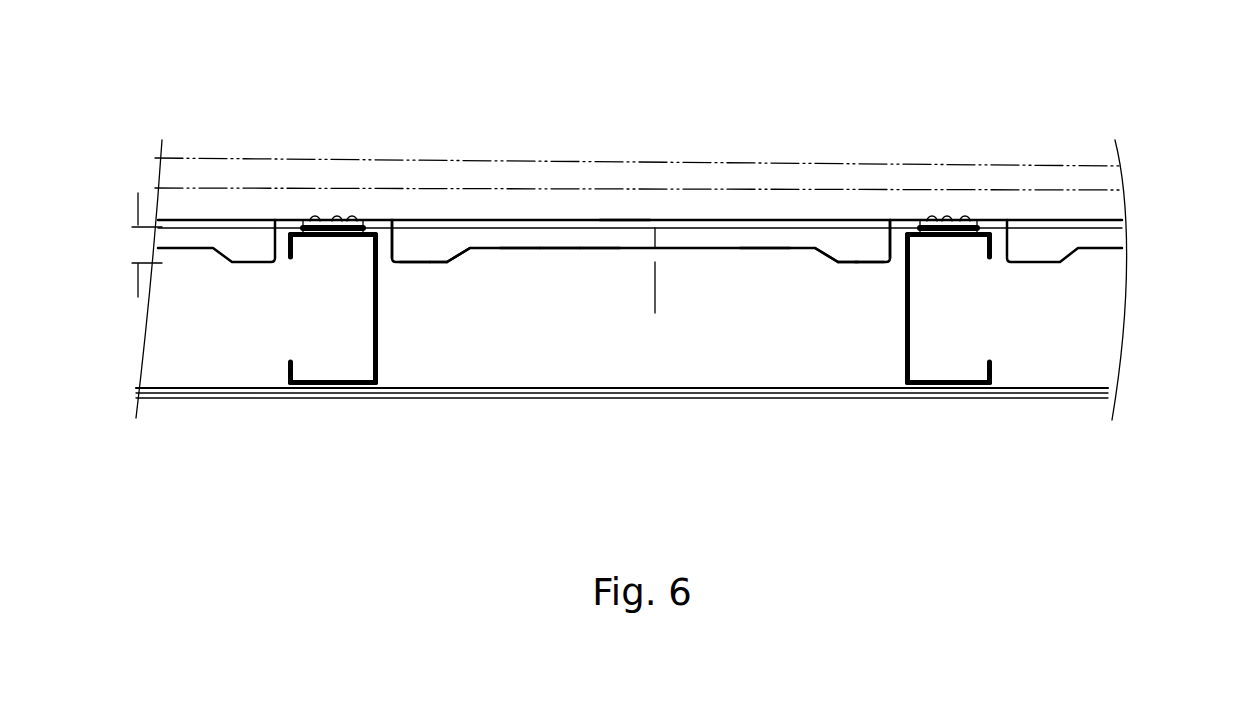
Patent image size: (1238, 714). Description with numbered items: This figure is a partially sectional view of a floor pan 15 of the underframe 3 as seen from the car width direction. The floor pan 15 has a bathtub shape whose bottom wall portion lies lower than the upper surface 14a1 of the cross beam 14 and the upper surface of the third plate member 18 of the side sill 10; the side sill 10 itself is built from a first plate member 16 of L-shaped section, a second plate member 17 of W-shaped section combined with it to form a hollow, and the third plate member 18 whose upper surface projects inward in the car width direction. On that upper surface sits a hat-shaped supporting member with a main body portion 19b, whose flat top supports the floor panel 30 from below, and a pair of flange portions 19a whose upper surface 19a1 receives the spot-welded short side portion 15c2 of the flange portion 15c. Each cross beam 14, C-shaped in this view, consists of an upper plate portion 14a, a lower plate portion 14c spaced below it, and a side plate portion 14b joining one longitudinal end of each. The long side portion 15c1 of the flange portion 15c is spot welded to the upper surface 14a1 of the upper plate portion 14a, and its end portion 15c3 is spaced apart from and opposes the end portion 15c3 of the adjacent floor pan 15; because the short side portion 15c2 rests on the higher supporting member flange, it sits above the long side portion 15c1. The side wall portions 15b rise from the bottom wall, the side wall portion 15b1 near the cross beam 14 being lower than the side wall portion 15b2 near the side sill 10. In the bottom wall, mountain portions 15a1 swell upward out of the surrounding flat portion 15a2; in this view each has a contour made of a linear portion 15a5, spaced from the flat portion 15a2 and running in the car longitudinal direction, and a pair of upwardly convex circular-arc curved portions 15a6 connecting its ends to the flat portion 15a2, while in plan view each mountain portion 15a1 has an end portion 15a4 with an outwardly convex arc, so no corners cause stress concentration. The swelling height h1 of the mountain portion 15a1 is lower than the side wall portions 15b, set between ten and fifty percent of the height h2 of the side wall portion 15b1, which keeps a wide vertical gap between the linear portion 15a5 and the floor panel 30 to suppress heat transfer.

The underframe 3 is at (223, 475).
The side sill 10 is at (1039, 414).
The cross beam 14 is at (383, 293).
The upper plate portion 14a is at (332, 218).
The upper surface 14a1 is at (353, 252).
The side plate portion 14b is at (380, 335).
The lower plate portion 14c is at (327, 388).
The floor pan 15 is at (193, 265).
The mountain portion 15a1 is at (520, 248).
The flat portion 15a2 is at (418, 260).
The end portion 15a4 is at (435, 260).
The linear portion 15a5 is at (763, 250).
The curved portion 15a6 is at (450, 258).
The side wall portion 15b is at (560, 237).
The side wall portion close to cross beam 15b1 is at (400, 247).
The side wall portion close to side sill 15b2 is at (592, 233).
The flange portion 15c is at (370, 222).
The long side portion 15c1 is at (353, 226).
The short side portion 15c2 is at (622, 222).
The end portion 15c3 is at (338, 226).
The first plate member 16 is at (805, 401).
The second plate member 17 is at (743, 394).
The third plate member 18 is at (335, 240).
The flange portion 19a is at (318, 237).
The upper surface 19a1 is at (330, 226).
The main body portion 19b is at (1118, 208).
The floor panel 30 is at (1072, 160).
The swelling height h1 is at (639, 270).
The height of side wall portion h2 is at (132, 245).